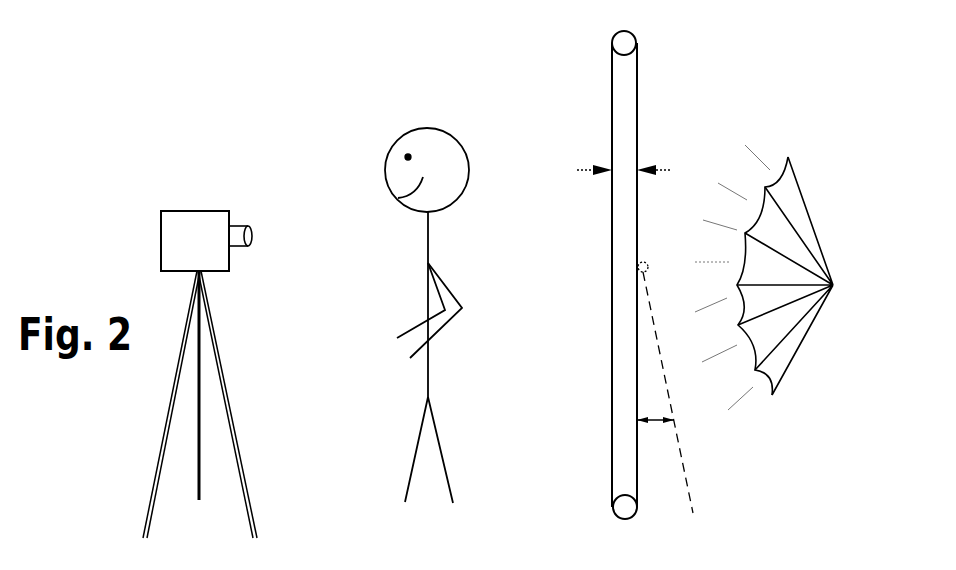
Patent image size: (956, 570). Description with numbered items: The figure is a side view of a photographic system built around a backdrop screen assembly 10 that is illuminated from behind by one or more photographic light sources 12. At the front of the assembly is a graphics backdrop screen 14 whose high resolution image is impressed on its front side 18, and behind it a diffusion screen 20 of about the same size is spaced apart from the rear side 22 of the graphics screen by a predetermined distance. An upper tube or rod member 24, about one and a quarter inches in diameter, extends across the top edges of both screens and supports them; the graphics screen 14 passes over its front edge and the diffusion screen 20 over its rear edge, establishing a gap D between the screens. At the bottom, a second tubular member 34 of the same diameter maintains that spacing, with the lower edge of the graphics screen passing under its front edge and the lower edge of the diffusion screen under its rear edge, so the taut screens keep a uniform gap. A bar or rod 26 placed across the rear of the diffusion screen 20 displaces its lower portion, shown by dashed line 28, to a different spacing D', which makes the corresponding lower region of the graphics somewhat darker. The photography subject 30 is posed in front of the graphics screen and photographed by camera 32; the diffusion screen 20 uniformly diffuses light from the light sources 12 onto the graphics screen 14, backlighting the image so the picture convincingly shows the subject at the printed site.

The backdrop screen assembly 10 is at (782, 79).
The photographic light source 12 is at (708, 280).
The graphics backdrop screen 14 is at (623, 147).
The front side of graphics screen 18 is at (612, 120).
The diffusion screen 20 is at (637, 465).
The rear side of graphics screen 22 is at (613, 450).
The upper tube or rod member 24 is at (633, 38).
The bar or rod 26 is at (650, 262).
The dashed line showing displaced lower portion of diffusion screen 28 is at (687, 470).
The photography subject 30 is at (468, 150).
The camera 32 is at (183, 253).
The second tubular member 34 is at (620, 512).